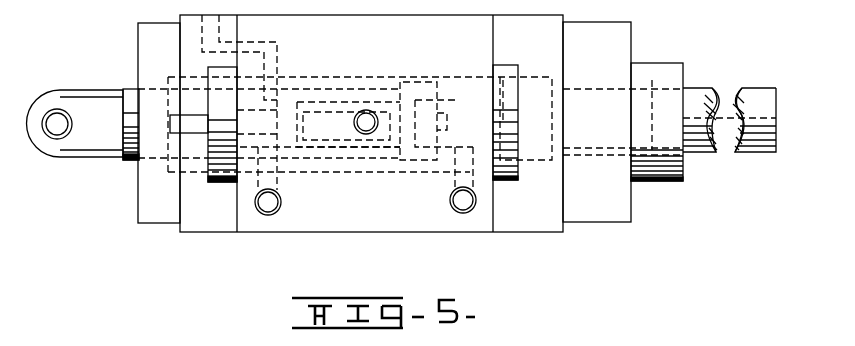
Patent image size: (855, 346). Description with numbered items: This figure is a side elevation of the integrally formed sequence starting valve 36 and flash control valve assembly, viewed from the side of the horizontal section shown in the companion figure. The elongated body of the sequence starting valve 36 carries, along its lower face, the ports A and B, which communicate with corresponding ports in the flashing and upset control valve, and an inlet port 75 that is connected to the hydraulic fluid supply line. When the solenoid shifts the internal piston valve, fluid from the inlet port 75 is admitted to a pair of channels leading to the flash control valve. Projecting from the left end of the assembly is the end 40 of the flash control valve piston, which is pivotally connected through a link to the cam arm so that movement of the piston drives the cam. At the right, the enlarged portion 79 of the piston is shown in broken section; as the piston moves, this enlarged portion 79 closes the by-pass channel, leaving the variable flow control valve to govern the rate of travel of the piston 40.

The end of piston 40 is at (97, 142).
The sequence starting valve 36 is at (457, 123).
The inlet port 75 is at (370, 134).
The port A is at (272, 214).
The port B is at (466, 213).
The enlarged portion 79 is at (696, 153).